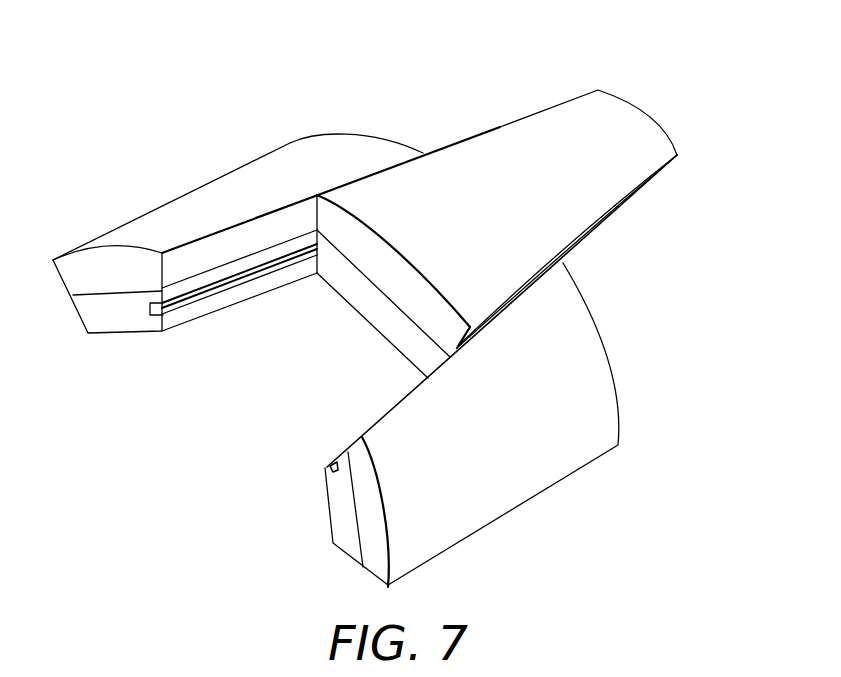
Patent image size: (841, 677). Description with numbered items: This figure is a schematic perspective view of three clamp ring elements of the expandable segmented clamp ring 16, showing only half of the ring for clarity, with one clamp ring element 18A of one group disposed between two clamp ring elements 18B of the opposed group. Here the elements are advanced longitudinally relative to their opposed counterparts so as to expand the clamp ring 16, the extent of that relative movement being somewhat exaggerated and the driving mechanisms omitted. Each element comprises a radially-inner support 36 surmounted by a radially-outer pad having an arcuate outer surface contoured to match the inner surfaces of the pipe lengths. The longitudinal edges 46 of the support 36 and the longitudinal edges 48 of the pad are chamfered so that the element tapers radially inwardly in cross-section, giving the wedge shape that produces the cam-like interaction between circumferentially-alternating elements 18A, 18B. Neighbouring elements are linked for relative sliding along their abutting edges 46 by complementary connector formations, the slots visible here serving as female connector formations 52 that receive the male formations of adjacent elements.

The clamp ring 16 is at (582, 500).
The clamp ring element 18A is at (655, 105).
The clamp ring element 18B is at (291, 129).
The radially-inner support 36 is at (122, 325).
The longitudinal edge of the support 46 is at (188, 311).
The longitudinal edge of the pad 48 is at (213, 247).
The female connector formation 52 is at (245, 272).